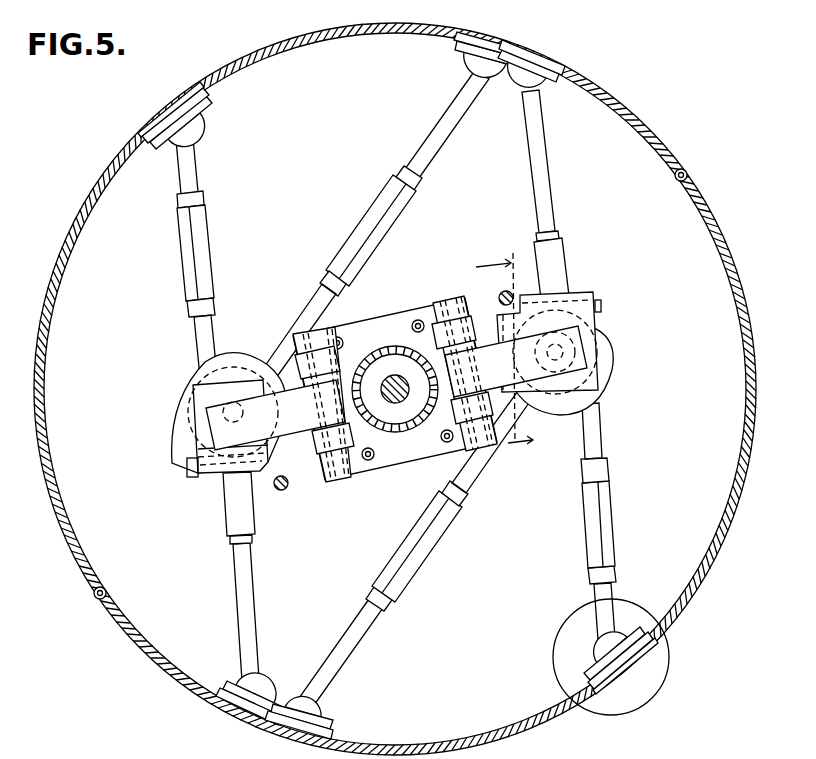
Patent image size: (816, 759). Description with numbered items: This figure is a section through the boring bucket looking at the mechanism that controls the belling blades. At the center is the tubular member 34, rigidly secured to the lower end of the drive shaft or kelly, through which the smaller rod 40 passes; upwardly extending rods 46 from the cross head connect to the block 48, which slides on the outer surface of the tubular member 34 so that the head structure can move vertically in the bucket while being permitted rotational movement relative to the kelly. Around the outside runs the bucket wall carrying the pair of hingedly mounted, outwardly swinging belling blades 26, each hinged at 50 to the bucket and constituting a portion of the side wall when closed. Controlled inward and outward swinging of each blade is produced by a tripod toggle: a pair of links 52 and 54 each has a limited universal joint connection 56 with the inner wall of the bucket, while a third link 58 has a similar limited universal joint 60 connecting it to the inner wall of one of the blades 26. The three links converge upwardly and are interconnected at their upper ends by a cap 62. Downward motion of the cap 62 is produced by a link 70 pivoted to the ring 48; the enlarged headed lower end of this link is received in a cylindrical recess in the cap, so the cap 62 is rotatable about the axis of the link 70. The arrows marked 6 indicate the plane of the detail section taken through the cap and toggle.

The belling blades 26 is at (67, 230).
The tubular member 34 is at (392, 372).
The rod 40 is at (372, 342).
The upwardly extending rods 46 is at (367, 458).
The block 48 is at (408, 464).
The hinge 50 is at (97, 603).
The link 52 is at (377, 207).
The link 54 is at (555, 213).
The limited universal joint connection 56 is at (486, 82).
The third link 58 is at (207, 258).
The limited universal joint 60 is at (202, 135).
The cap 62 is at (183, 445).
The link 70 is at (297, 438).
The section line 6- 6 is at (496, 364).